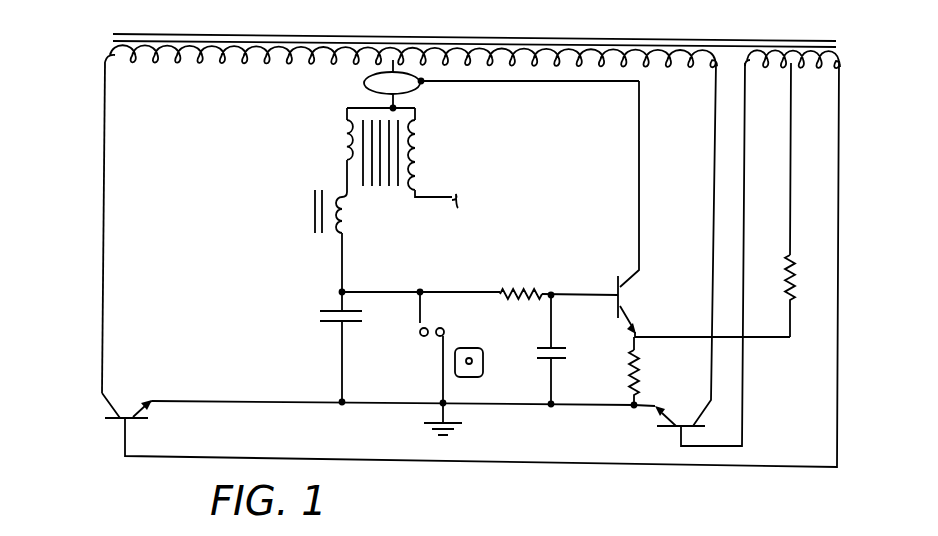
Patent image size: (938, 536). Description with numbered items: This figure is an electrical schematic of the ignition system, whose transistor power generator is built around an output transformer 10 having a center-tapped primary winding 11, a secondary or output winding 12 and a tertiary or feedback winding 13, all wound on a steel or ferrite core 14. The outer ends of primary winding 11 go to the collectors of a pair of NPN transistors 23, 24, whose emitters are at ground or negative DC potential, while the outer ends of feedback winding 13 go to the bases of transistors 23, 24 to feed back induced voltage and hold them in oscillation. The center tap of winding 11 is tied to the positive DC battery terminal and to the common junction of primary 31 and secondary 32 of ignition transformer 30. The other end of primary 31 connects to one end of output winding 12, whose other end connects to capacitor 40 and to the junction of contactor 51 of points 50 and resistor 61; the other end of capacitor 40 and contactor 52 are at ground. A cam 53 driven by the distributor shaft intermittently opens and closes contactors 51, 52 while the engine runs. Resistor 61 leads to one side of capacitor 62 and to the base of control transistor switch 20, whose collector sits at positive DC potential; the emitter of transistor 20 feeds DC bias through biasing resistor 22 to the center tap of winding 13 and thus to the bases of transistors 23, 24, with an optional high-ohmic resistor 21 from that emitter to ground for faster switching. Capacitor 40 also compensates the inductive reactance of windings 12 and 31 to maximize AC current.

The output transformer 10 is at (84, 48).
The center-tapped primary winding 11 is at (233, 62).
The secondary or output winding 12 is at (346, 218).
The tertiary or feedback winding 13 is at (814, 65).
The core 14 is at (306, 41).
The control transistor switch 20 is at (640, 298).
The resistor 21 is at (638, 330).
The biasing resistor 22 is at (786, 287).
The transistor 23 is at (118, 393).
The transistor 24 is at (683, 403).
The ignition transformer 30 is at (450, 147).
The primary 31 is at (348, 140).
The secondary 32 is at (415, 140).
The capacitor 40 is at (321, 320).
The points 50 is at (436, 363).
The contactor 51 is at (417, 323).
The contactor 52 is at (443, 378).
The cam 53 is at (471, 378).
The resistor 61 is at (520, 288).
The capacitor 62 is at (538, 347).